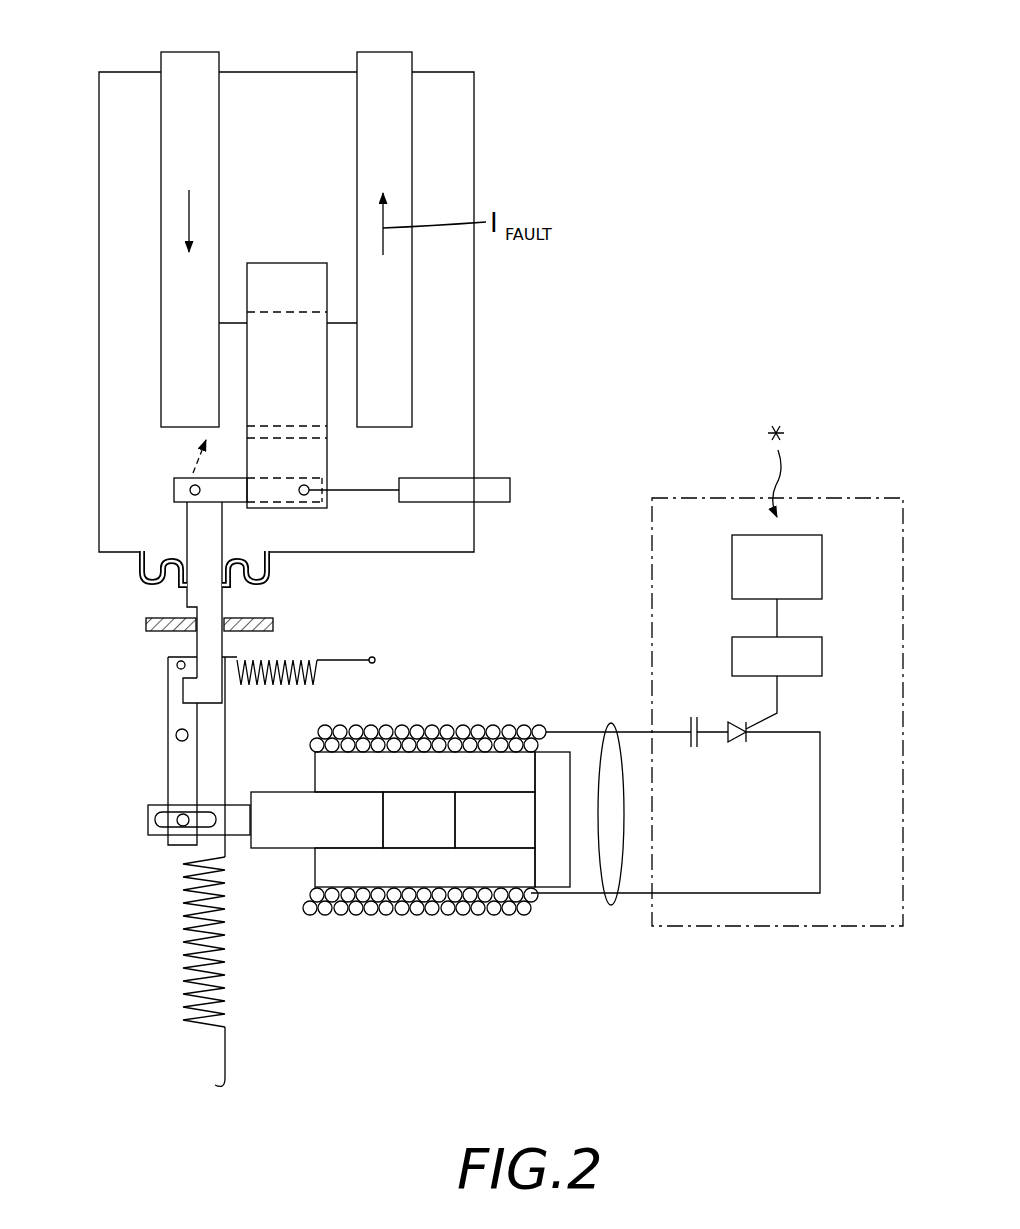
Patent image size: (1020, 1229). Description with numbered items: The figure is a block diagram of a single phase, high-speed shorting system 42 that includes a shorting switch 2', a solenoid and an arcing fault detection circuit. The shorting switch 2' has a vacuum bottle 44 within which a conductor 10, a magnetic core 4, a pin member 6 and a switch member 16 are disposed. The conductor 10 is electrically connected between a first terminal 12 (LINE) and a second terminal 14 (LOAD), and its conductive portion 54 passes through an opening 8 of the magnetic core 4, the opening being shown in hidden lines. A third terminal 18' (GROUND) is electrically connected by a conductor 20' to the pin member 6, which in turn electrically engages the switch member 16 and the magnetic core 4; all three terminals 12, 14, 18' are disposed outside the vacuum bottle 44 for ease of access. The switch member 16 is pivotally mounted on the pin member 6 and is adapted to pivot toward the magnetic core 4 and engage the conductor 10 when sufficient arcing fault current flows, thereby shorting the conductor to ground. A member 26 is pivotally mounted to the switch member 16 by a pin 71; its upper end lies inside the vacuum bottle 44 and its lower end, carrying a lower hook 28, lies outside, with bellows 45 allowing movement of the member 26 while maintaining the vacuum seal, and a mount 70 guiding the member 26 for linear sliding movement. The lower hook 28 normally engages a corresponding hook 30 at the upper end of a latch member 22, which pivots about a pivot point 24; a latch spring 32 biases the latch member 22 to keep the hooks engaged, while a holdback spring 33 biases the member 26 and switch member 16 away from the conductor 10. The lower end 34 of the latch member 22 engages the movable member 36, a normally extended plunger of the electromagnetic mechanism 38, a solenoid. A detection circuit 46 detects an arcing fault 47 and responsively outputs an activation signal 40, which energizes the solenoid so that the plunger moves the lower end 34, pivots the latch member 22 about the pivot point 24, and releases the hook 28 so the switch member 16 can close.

The shorting switch 2' is at (97, 631).
The magnetic core 4 is at (290, 260).
The pin member 6 is at (309, 486).
The opening 8 is at (310, 318).
The conductor 10 is at (159, 166).
The first terminal 12 is at (162, 50).
The second terminal 14 is at (408, 50).
The switch member 16 is at (171, 495).
The third terminal 18' is at (509, 467).
The conductor 20' is at (354, 514).
The latch member 22 is at (155, 760).
The pivot point 24 is at (176, 735).
The member 26 is at (179, 523).
The lower hook 28 is at (208, 697).
The hook 30 is at (184, 672).
The latch spring 32 is at (296, 658).
The holdback spring 33 is at (183, 989).
The lower end 34 is at (183, 826).
The movable member 36 is at (287, 850).
The electromagnetic mechanism 38 is at (435, 934).
The activation signal 40 is at (611, 724).
The shorting system 42 is at (597, 1018).
The vacuum bottle 44 is at (478, 288).
The bellows 45 is at (146, 572).
The detection circuit 46 is at (868, 928).
The arcing fault 47 is at (787, 433).
The conductive portion 54 is at (350, 373).
The mount 70 is at (267, 617).
The pin 71 is at (192, 484).